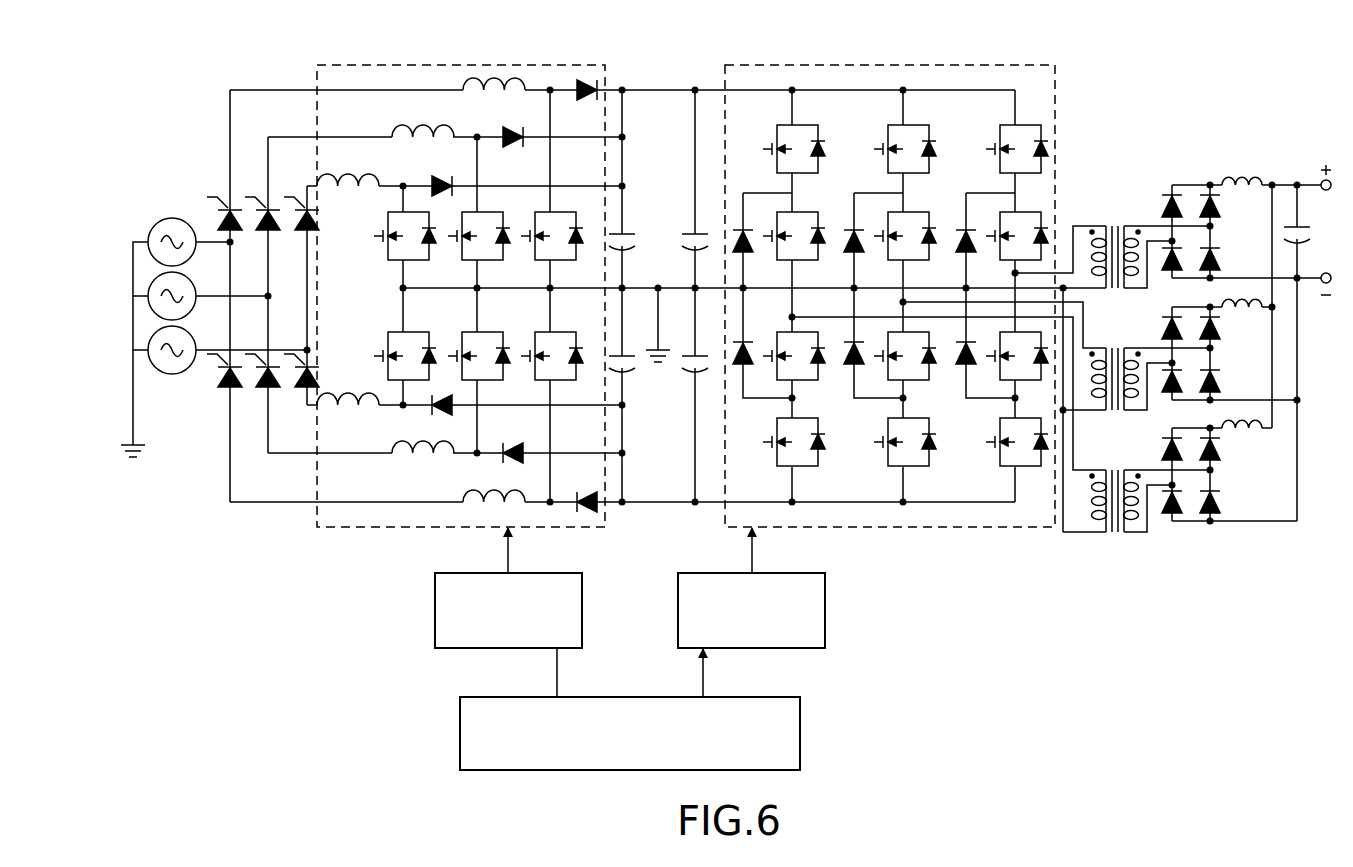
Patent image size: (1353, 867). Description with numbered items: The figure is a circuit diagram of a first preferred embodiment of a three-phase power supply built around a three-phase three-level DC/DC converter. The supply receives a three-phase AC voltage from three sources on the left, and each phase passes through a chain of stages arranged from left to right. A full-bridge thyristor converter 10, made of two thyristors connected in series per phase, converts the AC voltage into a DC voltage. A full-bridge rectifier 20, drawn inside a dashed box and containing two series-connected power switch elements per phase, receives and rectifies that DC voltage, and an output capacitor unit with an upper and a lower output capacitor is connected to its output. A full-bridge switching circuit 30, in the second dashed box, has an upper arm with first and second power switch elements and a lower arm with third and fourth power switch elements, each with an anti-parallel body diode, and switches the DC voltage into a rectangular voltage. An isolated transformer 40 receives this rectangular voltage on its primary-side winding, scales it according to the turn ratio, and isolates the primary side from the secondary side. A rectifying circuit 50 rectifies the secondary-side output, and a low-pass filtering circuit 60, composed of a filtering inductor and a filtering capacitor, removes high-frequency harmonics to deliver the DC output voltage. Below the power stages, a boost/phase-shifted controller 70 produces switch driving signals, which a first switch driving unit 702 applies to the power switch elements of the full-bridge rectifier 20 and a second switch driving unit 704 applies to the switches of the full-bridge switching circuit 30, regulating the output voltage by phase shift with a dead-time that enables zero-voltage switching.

The full-bridge thyristor converter 10 is at (206, 178).
The full-bridge rectifier 20 is at (340, 66).
The full-bridge switching circuit 30 is at (1028, 72).
The isolated transformer 40 is at (1116, 212).
The rectifying circuit 50 is at (1188, 180).
The low-pass filtering circuit 60 is at (1244, 176).
The boost/phase-shifted controller 70 is at (800, 733).
The first switch driving unit 702 is at (435, 607).
The second switch driving unit 704 is at (825, 600).